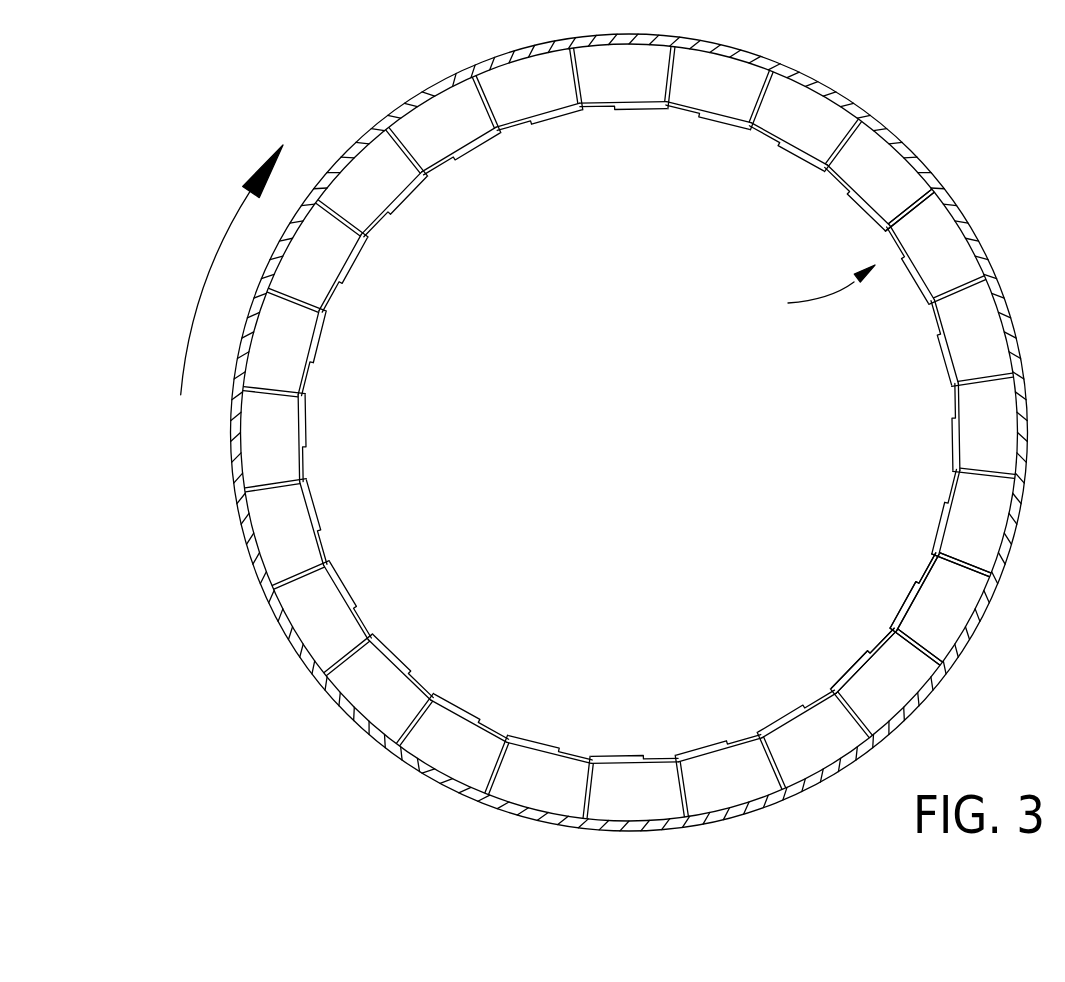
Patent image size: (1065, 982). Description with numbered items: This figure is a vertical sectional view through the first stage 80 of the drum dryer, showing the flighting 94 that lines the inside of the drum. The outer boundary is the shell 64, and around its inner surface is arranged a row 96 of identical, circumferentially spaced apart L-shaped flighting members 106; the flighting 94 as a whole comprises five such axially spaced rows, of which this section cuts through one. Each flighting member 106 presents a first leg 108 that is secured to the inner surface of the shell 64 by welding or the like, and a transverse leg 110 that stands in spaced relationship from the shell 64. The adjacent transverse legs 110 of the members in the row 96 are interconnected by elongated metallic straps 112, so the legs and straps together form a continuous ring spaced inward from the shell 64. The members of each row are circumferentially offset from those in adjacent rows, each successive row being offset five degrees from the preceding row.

The shell 64 is at (1010, 313).
The first stage 80 is at (629, 432).
The flighting 94 is at (816, 292).
The row of flighting elements 96 is at (912, 208).
The L-shaped flighting member 106 is at (960, 558).
The first leg 108 is at (916, 654).
The transverse leg 110 is at (886, 648).
The elongated metallic strap 112 is at (912, 598).